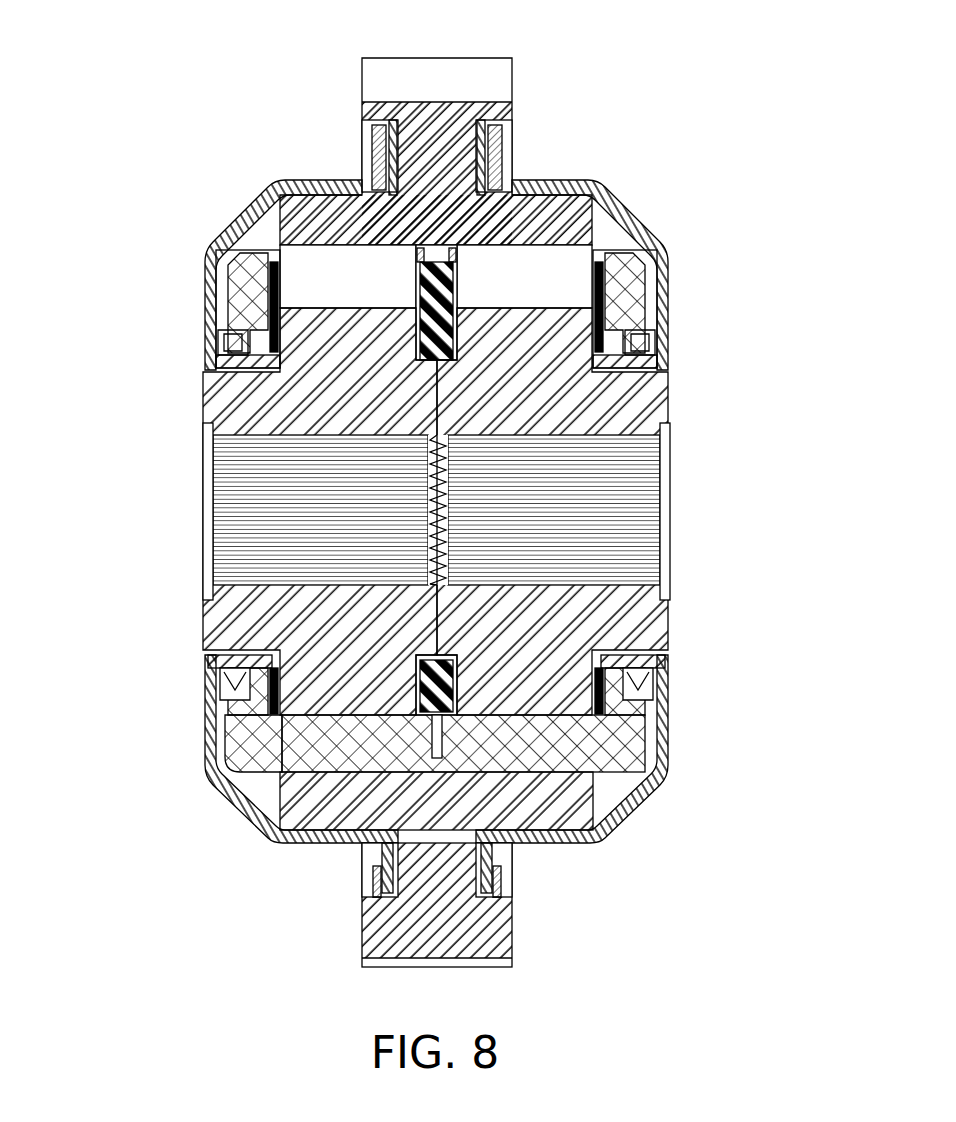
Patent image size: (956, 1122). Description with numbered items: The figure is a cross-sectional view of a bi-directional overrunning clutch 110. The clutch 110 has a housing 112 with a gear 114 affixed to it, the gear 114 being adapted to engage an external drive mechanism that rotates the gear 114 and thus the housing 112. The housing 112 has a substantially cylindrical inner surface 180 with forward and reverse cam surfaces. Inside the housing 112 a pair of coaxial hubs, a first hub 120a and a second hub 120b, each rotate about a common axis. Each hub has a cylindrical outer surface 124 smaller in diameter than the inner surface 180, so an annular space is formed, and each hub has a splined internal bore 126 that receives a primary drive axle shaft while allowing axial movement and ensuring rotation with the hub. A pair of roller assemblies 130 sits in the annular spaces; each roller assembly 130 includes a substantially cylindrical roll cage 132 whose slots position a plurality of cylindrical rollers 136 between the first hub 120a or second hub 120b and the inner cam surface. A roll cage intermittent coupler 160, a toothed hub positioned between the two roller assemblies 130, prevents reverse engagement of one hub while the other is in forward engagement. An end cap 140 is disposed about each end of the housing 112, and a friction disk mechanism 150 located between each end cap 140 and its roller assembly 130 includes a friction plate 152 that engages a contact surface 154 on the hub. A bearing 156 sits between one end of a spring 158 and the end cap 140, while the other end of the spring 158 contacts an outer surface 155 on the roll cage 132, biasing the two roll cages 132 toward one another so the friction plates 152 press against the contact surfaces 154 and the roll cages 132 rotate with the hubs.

The bi-directional overrunning clutch 110 is at (650, 78).
The housing 112 is at (445, 815).
The gear 114 is at (443, 75).
The first hub 120a is at (637, 403).
The second hub 120b is at (255, 405).
The outer surface 124 is at (523, 720).
The internal bore 126 is at (250, 497).
The roller assembly 130 is at (230, 766).
The roll cage 132 is at (420, 258).
The roller 136 is at (333, 267).
The end cap 140 is at (228, 235).
The friction disk mechanism 150 is at (268, 245).
The friction plate 152 is at (240, 260).
The contact surface 154 is at (235, 690).
The outer surface 155 is at (650, 693).
The bearing 156 is at (228, 345).
The spring 158 is at (240, 360).
The roll cage intermittent coupler 160 is at (440, 287).
The inner surface 180 is at (343, 757).